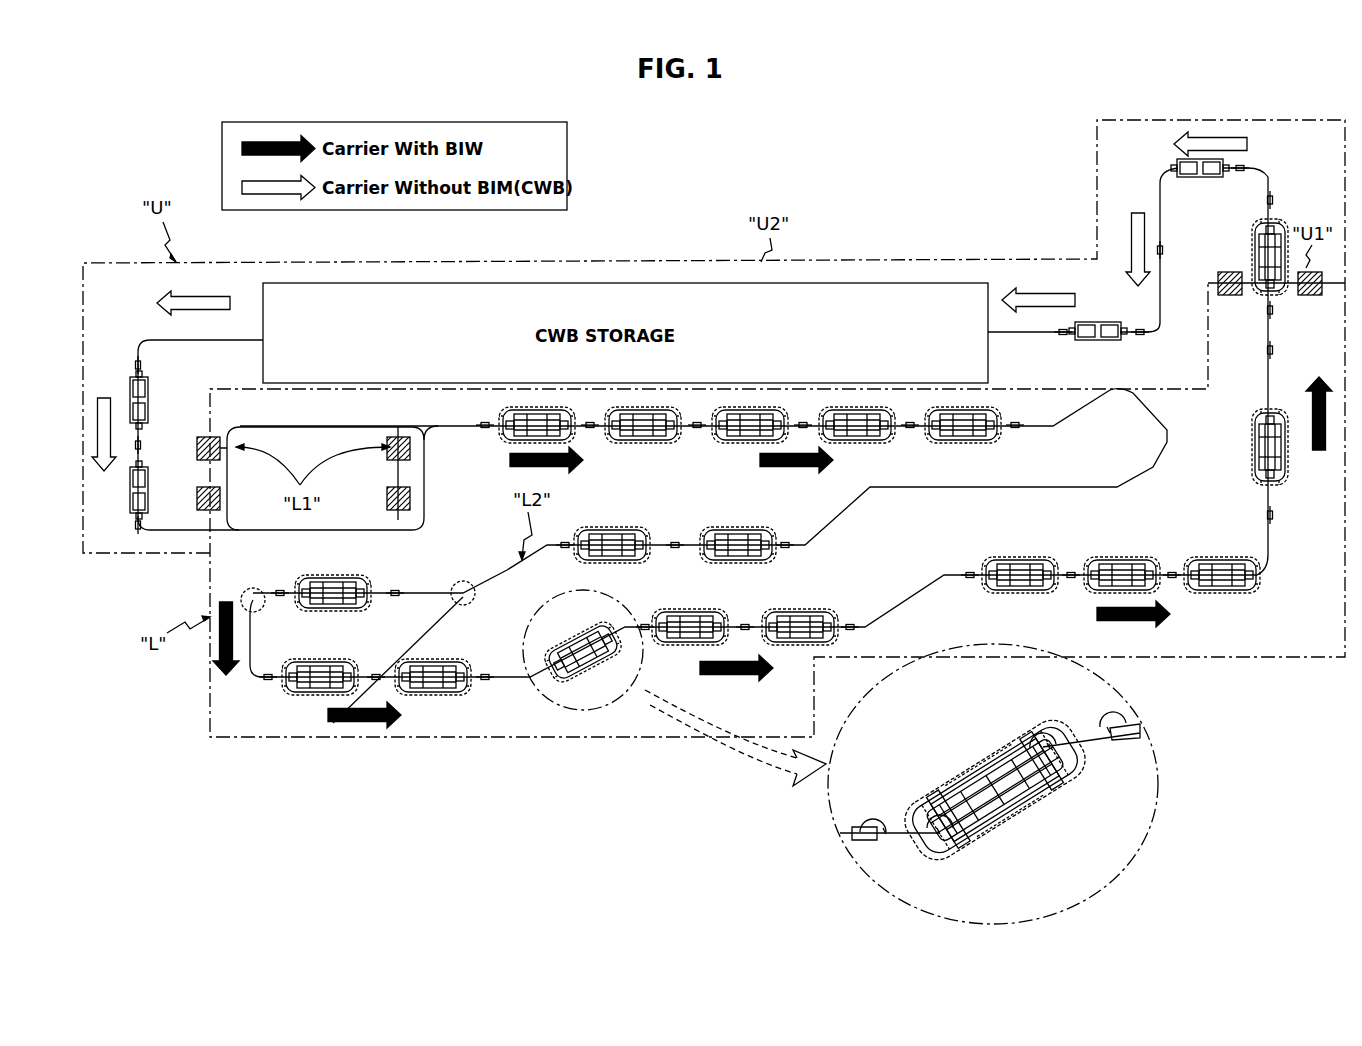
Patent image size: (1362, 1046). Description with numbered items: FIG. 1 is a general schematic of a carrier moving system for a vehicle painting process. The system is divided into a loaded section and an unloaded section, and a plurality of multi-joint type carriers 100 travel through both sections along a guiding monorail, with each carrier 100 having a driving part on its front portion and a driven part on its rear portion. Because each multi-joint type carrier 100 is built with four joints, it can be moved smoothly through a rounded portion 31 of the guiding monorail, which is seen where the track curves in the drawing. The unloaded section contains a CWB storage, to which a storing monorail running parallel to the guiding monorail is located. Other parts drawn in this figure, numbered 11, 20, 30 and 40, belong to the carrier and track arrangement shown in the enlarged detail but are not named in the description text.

The rail 11 is at (940, 803).
The carrier body 20 is at (1060, 793).
The conveying track 30 is at (243, 533).
The rounded portion 31 is at (333, 723).
The carrier 40 is at (503, 447).
The multi-joint type carrier 100 is at (148, 407).